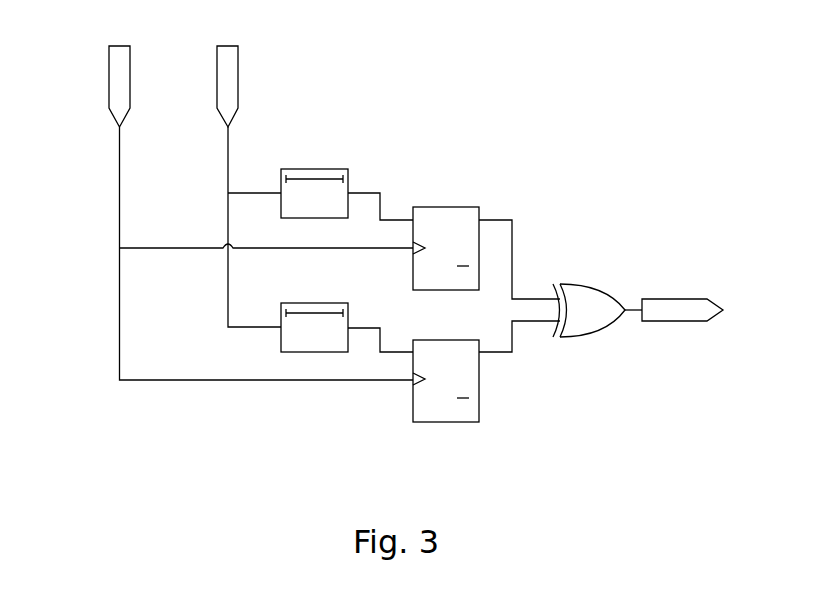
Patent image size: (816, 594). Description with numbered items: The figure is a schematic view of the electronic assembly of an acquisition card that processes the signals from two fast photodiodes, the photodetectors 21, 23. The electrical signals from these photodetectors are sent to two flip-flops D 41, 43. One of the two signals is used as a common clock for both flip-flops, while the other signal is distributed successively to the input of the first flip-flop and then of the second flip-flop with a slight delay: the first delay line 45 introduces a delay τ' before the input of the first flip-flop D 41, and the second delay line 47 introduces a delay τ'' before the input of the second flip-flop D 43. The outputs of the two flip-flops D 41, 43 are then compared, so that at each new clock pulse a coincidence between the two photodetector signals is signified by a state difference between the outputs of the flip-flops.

The photodetector 21 is at (99, 119).
The photodetector 23 is at (250, 93).
The first delay line 45 is at (352, 166).
The second delay line 47 is at (352, 302).
The flip-flop D 41 is at (480, 205).
The flip-flop D 43 is at (481, 424).